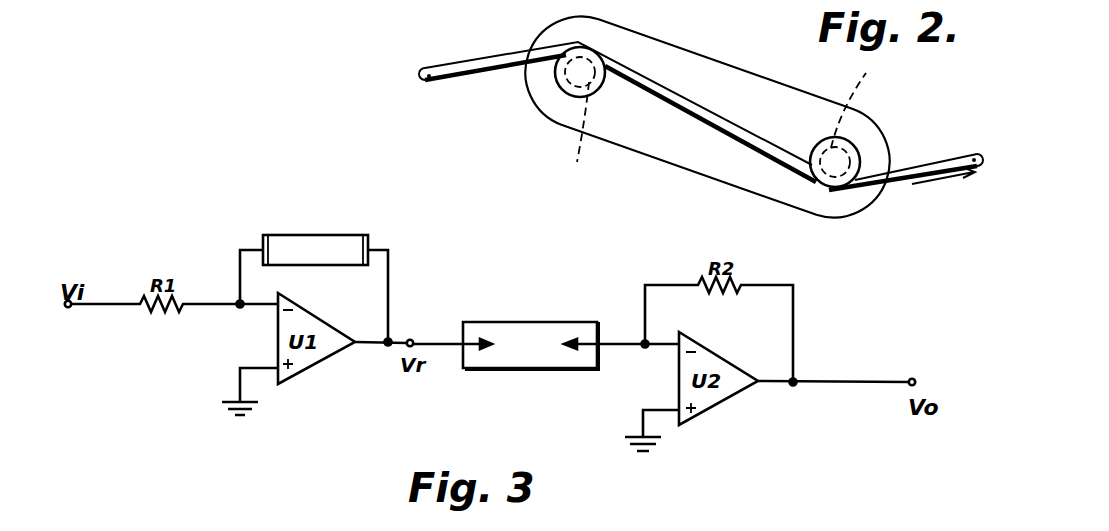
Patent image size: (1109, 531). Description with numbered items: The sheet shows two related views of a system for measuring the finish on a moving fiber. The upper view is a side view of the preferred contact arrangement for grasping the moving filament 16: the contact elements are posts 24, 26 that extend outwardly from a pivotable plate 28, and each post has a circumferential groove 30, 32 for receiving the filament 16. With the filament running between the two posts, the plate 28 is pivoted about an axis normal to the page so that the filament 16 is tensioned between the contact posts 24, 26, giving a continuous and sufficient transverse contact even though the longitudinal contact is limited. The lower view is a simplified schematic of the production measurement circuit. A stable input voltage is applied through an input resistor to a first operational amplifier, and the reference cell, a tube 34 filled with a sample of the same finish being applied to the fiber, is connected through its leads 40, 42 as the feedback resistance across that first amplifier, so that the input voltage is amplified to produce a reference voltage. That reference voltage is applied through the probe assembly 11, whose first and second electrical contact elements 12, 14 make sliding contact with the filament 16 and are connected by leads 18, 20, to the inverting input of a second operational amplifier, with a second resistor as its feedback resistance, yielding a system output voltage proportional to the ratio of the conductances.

In FIG. 3, the probe assembly 11 is at (549, 380).
In FIG. 3, the first electrical contact element 12 is at (490, 338).
In FIG. 3, the second electrical contact element 14 is at (570, 338).
In FIG. 2, the moving filament 16 is at (927, 157).
In FIG. 3, the lead 18 is at (448, 349).
In FIG. 3, the lead 20 is at (624, 350).
In FIG. 2, the contact post 24 is at (562, 88).
In FIG. 2, the contact post 26 is at (848, 138).
In FIG. 2, the pivotable plate 28 is at (681, 166).
In FIG. 2, the circumferential groove 30 is at (586, 123).
In FIG. 2, the circumferential groove 32 is at (861, 119).
In FIG. 3, the reference cell tube 34 is at (300, 233).
In FIG. 3, the lead 40 is at (240, 272).
In FIG. 3, the lead 42 is at (392, 298).